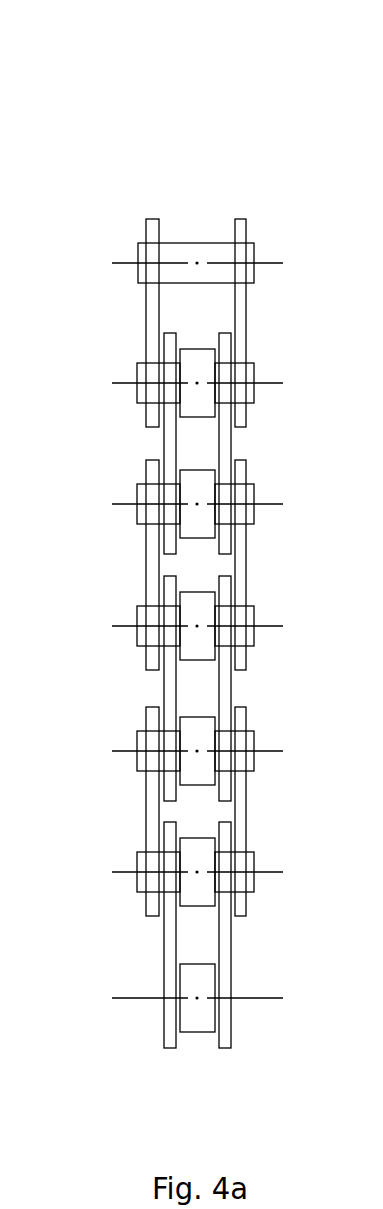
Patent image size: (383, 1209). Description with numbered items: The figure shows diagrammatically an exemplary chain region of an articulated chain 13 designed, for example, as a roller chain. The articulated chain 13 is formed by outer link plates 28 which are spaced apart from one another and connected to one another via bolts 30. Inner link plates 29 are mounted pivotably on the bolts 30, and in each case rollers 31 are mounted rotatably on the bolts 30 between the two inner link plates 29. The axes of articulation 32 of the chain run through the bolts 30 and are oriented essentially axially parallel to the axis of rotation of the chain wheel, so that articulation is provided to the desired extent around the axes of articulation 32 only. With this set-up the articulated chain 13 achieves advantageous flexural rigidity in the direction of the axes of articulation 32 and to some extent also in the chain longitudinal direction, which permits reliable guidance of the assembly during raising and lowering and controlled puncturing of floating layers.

The articulated chain 13 is at (218, 173).
The outer link plates 28 is at (150, 303).
The inner link plates 29 is at (168, 448).
The bolts 30 is at (205, 243).
The rollers 31 is at (183, 404).
The axes of articulation 32 is at (117, 382).